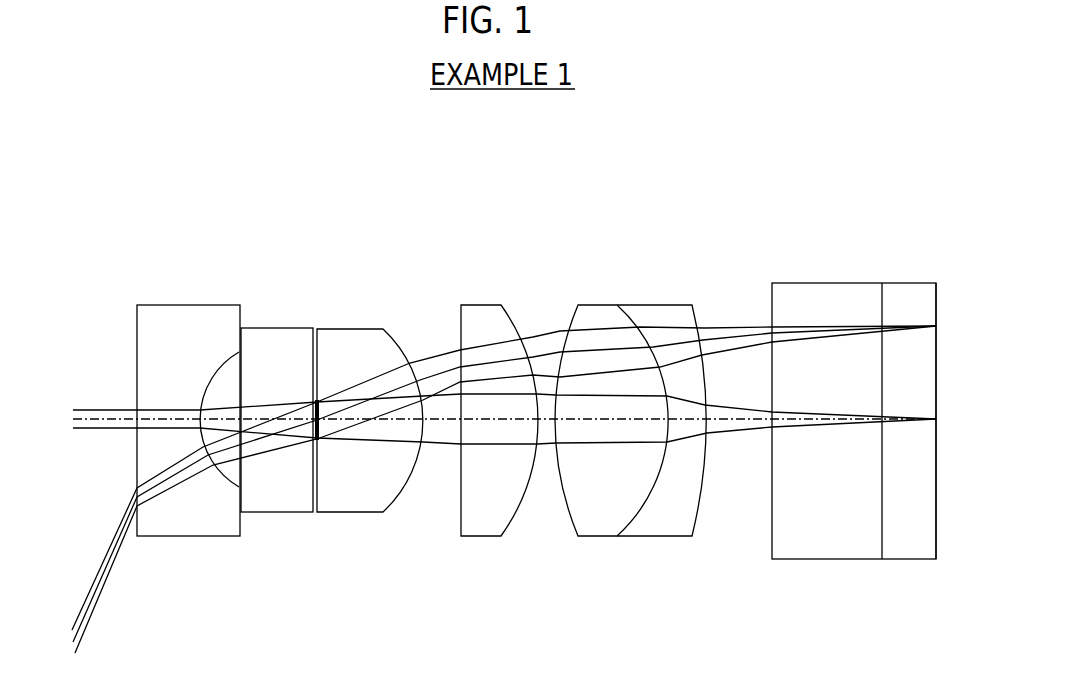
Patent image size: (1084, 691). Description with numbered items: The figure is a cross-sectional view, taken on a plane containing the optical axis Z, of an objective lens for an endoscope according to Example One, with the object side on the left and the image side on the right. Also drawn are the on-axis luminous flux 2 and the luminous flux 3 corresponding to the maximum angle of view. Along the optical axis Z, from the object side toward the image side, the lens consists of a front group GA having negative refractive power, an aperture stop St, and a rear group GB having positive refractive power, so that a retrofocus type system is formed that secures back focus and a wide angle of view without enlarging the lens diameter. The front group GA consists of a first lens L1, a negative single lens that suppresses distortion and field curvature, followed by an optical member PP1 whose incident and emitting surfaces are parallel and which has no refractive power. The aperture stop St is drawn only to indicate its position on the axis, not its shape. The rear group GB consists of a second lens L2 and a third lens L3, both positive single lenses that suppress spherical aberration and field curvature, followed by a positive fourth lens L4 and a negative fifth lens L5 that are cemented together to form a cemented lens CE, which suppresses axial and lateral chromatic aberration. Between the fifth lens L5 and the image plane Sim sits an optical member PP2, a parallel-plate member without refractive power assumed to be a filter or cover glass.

The optical axis Z is at (98, 419).
The on-axis luminous flux 2 is at (72, 405).
The luminous flux corresponding to the maximum angle of view 3 is at (70, 625).
The front group GA is at (225, 360).
The first lens L1 is at (182, 305).
The optical member PP1 is at (277, 374).
The rear group GB is at (510, 358).
The aperture stop St is at (340, 443).
The second lens L2 is at (350, 329).
The third lens L3 is at (477, 305).
The cemented lens CE is at (630, 360).
The fourth lens L4 is at (590, 305).
The fifth lens L5 is at (647, 305).
The optical member PP2 is at (936, 254).
The image plane Sim is at (936, 515).